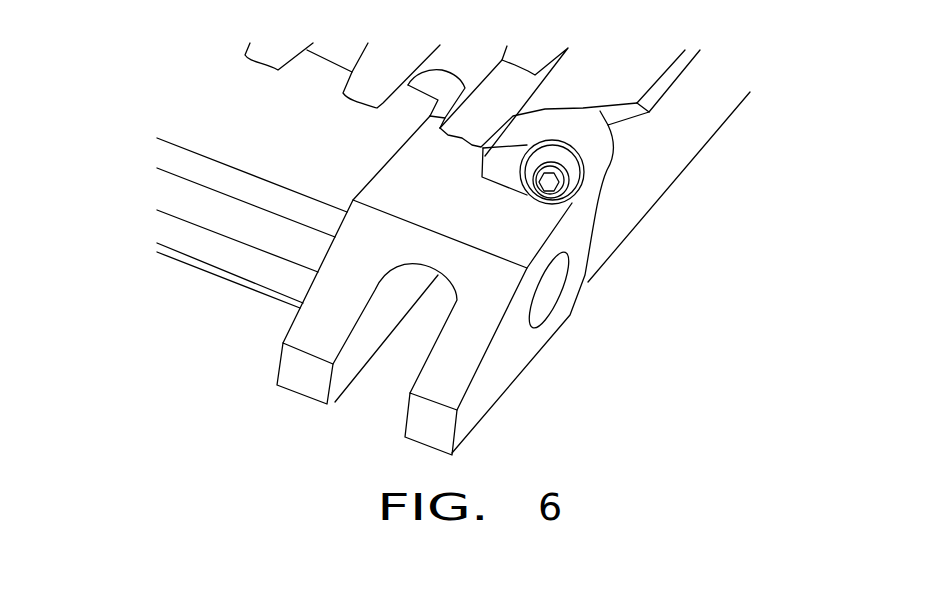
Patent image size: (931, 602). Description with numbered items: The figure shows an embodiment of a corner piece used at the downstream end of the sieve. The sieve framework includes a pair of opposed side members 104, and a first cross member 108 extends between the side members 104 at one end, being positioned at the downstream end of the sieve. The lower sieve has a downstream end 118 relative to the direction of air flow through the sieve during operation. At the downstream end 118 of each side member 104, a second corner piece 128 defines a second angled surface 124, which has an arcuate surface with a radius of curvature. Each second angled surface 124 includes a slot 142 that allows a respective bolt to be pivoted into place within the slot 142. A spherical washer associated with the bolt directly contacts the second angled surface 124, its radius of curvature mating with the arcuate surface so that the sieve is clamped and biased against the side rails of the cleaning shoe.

The side member 104 is at (655, 197).
The first cross member 108 is at (230, 278).
The downstream end 118 is at (617, 253).
The second angled surface 124 is at (455, 375).
The second corner piece 128 is at (555, 338).
The slot 142 is at (378, 392).